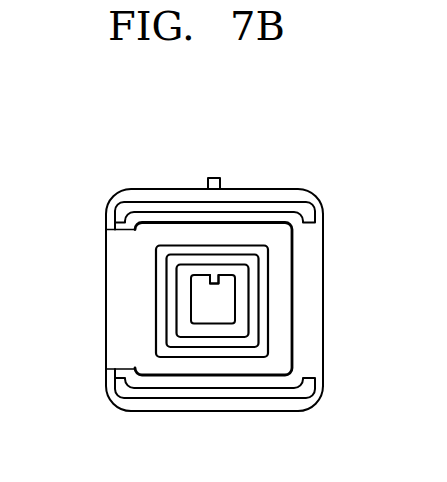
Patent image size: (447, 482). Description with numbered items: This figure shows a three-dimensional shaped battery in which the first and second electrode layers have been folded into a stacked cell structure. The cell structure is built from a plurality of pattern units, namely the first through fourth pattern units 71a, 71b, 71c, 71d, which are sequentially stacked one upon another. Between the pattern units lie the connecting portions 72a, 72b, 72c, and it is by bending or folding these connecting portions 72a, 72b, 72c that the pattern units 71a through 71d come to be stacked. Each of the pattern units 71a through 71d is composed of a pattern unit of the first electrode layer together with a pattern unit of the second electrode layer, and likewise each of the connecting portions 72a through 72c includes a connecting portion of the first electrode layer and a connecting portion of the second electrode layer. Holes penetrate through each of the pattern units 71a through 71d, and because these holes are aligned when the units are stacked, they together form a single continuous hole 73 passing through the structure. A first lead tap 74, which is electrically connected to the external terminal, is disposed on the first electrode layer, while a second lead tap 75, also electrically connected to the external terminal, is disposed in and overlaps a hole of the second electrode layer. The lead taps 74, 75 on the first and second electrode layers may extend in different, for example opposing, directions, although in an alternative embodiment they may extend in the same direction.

The first pattern unit 71a is at (157, 230).
The second pattern unit 71b is at (305, 197).
The third pattern unit 71c is at (196, 220).
The fourth pattern unit 71d is at (265, 205).
The first connecting portion 72a is at (110, 300).
The second connecting portion 72b is at (315, 337).
The third connecting portion 72c is at (112, 373).
The continuous hole 73 is at (213, 310).
The first lead tap 74 is at (217, 282).
The second lead tap 75 is at (220, 177).